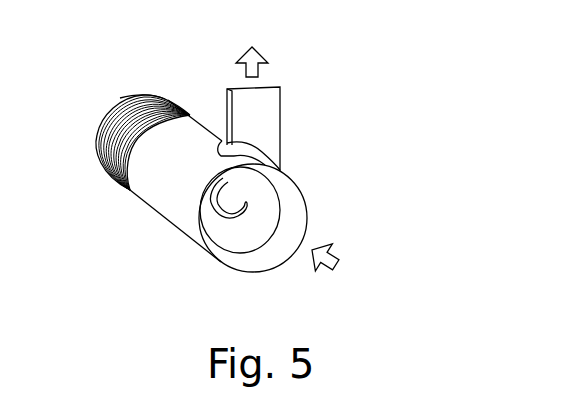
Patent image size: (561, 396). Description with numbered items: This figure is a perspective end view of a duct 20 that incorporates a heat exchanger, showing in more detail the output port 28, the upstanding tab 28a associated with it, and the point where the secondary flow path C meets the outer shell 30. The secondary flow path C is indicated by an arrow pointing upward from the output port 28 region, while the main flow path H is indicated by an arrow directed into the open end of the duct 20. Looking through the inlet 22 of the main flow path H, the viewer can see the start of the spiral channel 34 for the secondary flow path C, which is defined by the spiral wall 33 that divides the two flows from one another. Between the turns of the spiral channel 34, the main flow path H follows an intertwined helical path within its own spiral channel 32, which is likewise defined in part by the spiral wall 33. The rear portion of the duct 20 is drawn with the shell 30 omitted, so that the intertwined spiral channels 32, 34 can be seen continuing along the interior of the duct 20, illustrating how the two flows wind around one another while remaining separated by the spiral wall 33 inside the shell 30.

The duct 20 is at (168, 242).
The inlet 22 is at (281, 257).
The output port 28 is at (262, 158).
The tab 28a is at (270, 112).
The shell 30 is at (150, 193).
The spiral channel 32 is at (165, 97).
The spiral wall 33 is at (240, 242).
The spiral channel 34 is at (262, 187).
The secondary flow path C is at (255, 52).
The main flow path H is at (333, 262).